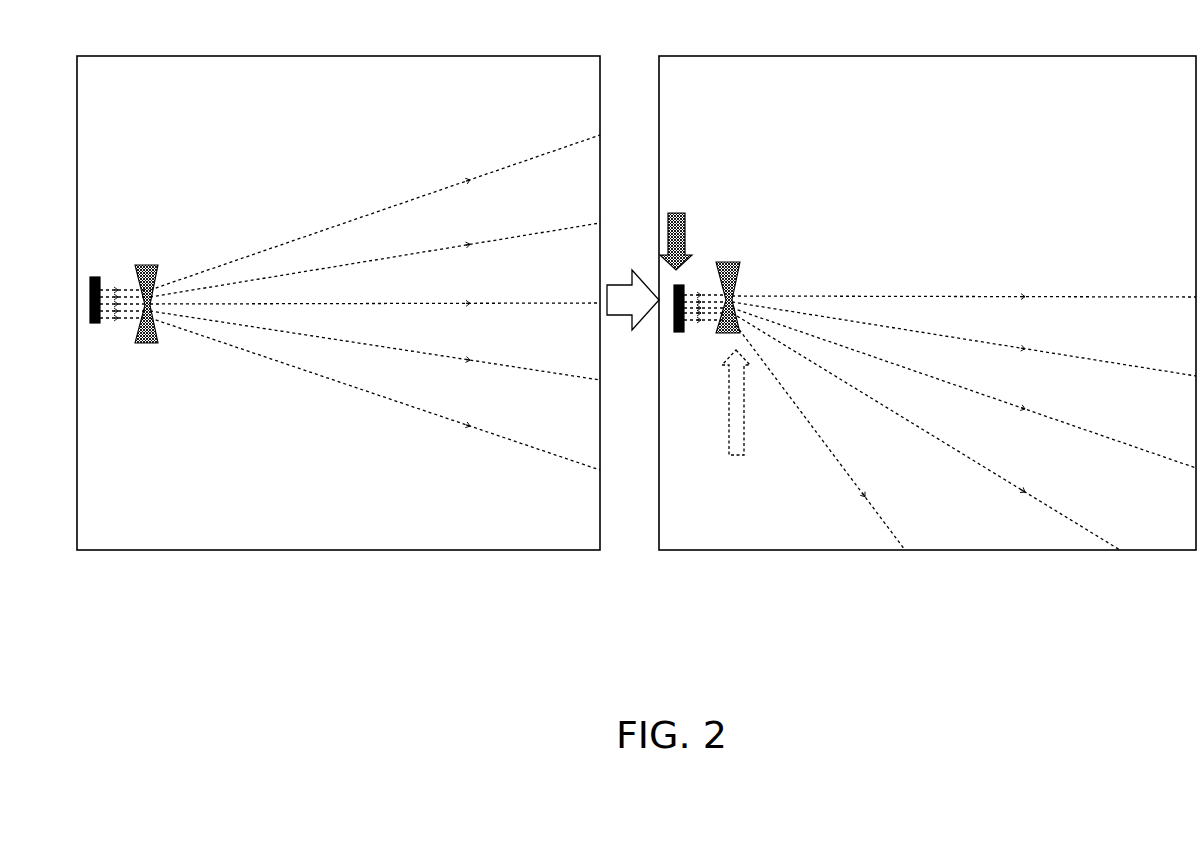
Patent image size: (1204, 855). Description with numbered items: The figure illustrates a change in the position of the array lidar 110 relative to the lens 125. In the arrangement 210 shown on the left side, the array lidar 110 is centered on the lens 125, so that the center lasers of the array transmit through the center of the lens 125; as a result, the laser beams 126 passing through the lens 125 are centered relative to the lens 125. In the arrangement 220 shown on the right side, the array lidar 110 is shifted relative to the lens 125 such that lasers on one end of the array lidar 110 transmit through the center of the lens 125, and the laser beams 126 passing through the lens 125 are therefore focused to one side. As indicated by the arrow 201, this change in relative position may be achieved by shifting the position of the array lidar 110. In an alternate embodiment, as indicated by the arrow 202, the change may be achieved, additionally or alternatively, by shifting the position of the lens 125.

The array lidar 110 is at (98, 276).
The lens 125 is at (155, 261).
The laser beams 126 is at (467, 177).
The arrow 201 is at (680, 212).
The arrow 202 is at (745, 437).
The arrangement 210 is at (212, 216).
The arrangement 220 is at (796, 225).